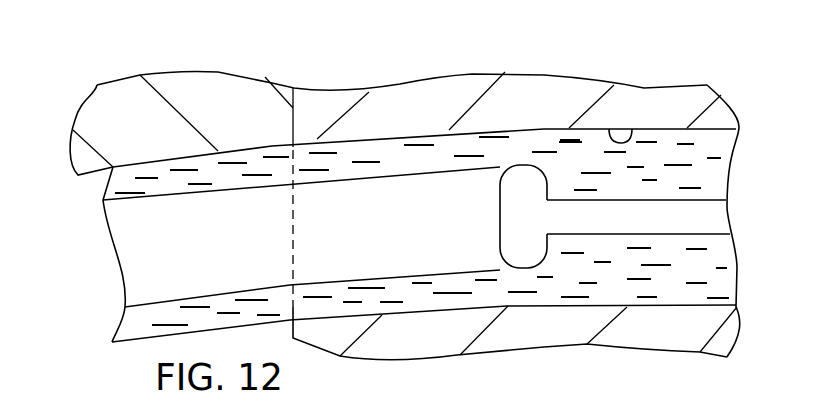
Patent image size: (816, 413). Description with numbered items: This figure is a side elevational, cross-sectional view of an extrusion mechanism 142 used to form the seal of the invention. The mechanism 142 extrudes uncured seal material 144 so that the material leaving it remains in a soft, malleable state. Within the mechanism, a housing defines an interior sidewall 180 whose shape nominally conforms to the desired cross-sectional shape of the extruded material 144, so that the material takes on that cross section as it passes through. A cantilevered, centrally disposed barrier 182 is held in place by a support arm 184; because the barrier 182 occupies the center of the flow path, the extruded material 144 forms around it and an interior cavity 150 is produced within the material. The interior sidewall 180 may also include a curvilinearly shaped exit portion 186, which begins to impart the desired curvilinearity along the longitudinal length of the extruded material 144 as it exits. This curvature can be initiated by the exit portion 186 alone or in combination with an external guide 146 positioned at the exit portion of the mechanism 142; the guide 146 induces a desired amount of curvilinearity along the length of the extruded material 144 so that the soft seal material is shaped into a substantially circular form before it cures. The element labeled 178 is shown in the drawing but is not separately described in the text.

The extrusion mechanism 142 is at (663, 36).
The uncured seal material 144 is at (112, 185).
The guide 146 is at (177, 78).
The interior cavity 150 is at (158, 247).
The tubular wall 178 is at (544, 97).
The interior sidewall 180 is at (632, 135).
The barrier 182 is at (517, 218).
The support arm 184 is at (709, 212).
The curvilinearly shaped exit portion 186 is at (368, 137).